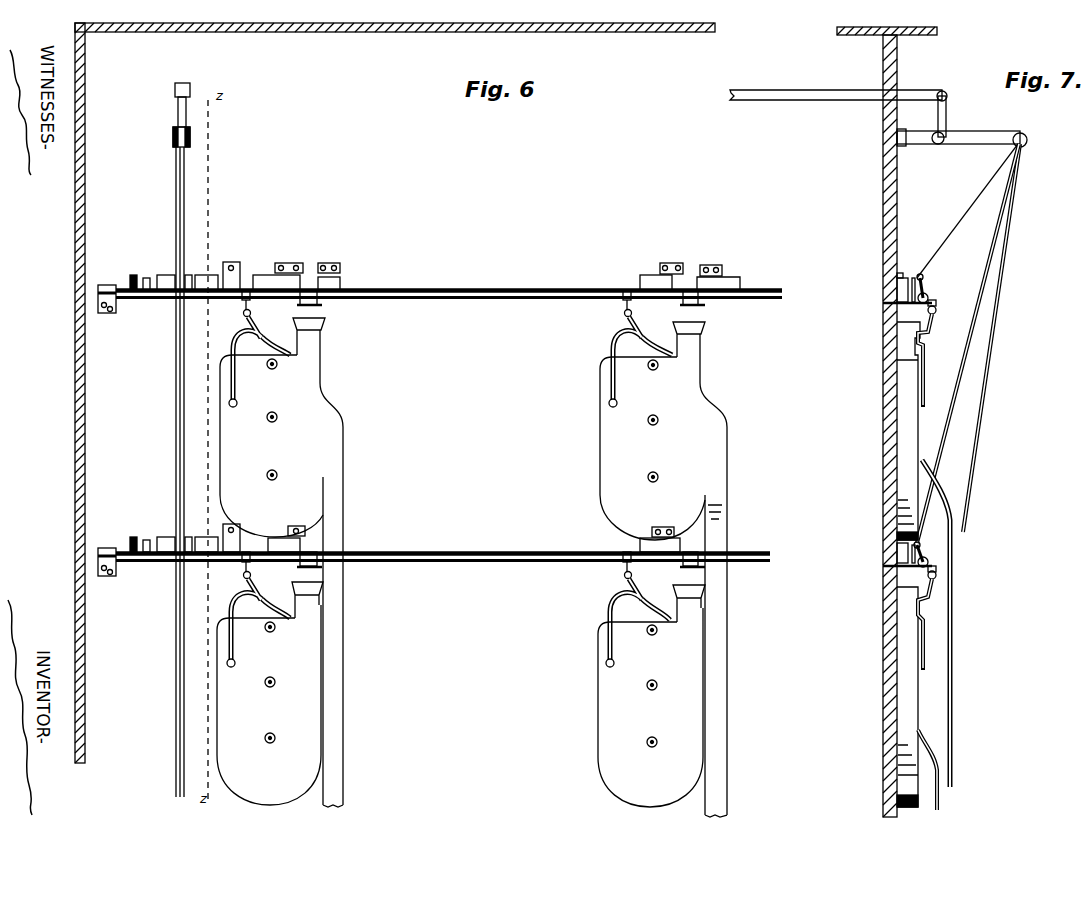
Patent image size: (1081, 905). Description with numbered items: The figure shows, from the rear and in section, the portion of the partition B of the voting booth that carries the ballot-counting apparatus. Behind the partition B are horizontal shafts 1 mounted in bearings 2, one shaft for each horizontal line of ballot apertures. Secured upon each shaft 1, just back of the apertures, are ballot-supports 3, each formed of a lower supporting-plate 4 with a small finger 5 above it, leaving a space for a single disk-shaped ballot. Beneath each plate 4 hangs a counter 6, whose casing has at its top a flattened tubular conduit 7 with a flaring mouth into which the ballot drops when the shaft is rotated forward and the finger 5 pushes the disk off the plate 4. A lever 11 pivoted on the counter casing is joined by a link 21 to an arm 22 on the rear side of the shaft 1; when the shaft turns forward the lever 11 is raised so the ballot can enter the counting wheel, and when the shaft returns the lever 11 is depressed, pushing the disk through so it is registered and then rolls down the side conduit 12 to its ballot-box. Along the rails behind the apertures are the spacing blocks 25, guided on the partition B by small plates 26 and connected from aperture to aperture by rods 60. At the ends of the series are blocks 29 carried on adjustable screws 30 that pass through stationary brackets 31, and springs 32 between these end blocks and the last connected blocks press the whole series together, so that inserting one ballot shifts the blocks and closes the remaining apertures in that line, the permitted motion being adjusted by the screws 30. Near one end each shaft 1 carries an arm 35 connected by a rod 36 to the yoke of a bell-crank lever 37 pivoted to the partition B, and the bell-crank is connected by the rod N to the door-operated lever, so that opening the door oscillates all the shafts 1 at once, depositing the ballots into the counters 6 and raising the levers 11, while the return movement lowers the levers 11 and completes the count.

In FIG. 6, the horizontal shaft 1 is at (435, 300).
In FIG. 7, the horizontal shaft 1 is at (929, 297).
In FIG. 6, the bearing 2 is at (107, 285).
In FIG. 6, the ballot-support 3 is at (322, 305).
In FIG. 7, the ballot-support 3 is at (937, 305).
In FIG. 6, the lower supporting-plate 4 is at (297, 306).
In FIG. 7, the lower supporting-plate 4 is at (907, 443).
In FIG. 7, the finger 5 is at (913, 278).
In FIG. 6, the counter 6 is at (472, 581).
In FIG. 7, the counter 6 is at (896, 303).
In FIG. 6, the tubular conduit 7 is at (498, 470).
In FIG. 6, the lever 11 is at (280, 340).
In FIG. 7, the lever 11 is at (926, 362).
In FIG. 6, the conduit 12 is at (527, 622).
In FIG. 7, the conduit 12 is at (940, 806).
In FIG. 6, the link 21 is at (250, 327).
In FIG. 7, the link 21 is at (931, 340).
In FIG. 6, the arm 22 is at (243, 312).
In FIG. 7, the arm 22 is at (936, 313).
In FIG. 6, the block 25 is at (645, 275).
In FIG. 7, the block 25 is at (897, 284).
In FIG. 6, the small plate 26 is at (292, 263).
In FIG. 7, the small plate 26 is at (900, 273).
In FIG. 6, the end block 29 is at (165, 275).
In FIG. 6, the adjustable screw 30 is at (133, 275).
In FIG. 6, the stationary bracket 31 is at (146, 278).
In FIG. 6, the spring 32 is at (203, 537).
In FIG. 7, the arm 35 is at (926, 279).
In FIG. 6, the link or rod 36 is at (176, 190).
In FIG. 7, the link or rod 36 is at (972, 207).
In FIG. 6, the bell-crank lever 37 is at (175, 125).
In FIG. 7, the bell-crank lever 37 is at (962, 132).
In FIG. 6, the rod 60 is at (456, 282).
In FIG. 6, the rod or link N is at (185, 84).
In FIG. 7, the rod or link N is at (795, 100).
In FIG. 7, the partition B is at (883, 194).